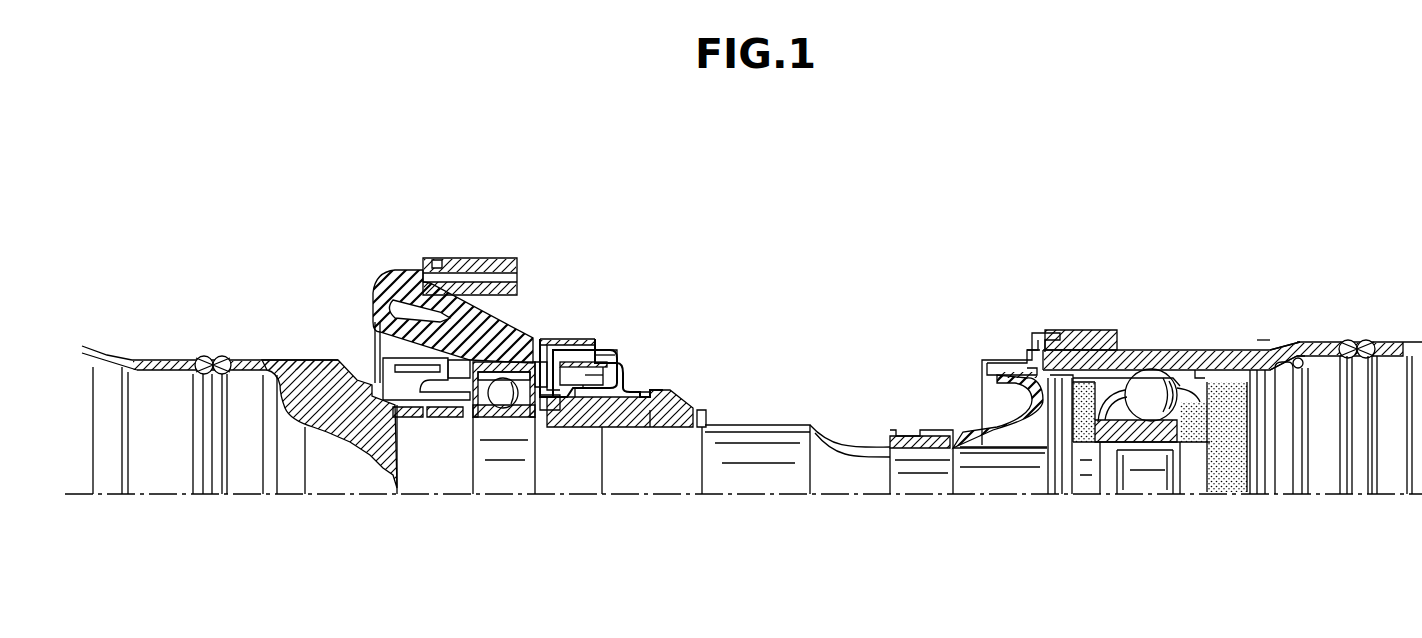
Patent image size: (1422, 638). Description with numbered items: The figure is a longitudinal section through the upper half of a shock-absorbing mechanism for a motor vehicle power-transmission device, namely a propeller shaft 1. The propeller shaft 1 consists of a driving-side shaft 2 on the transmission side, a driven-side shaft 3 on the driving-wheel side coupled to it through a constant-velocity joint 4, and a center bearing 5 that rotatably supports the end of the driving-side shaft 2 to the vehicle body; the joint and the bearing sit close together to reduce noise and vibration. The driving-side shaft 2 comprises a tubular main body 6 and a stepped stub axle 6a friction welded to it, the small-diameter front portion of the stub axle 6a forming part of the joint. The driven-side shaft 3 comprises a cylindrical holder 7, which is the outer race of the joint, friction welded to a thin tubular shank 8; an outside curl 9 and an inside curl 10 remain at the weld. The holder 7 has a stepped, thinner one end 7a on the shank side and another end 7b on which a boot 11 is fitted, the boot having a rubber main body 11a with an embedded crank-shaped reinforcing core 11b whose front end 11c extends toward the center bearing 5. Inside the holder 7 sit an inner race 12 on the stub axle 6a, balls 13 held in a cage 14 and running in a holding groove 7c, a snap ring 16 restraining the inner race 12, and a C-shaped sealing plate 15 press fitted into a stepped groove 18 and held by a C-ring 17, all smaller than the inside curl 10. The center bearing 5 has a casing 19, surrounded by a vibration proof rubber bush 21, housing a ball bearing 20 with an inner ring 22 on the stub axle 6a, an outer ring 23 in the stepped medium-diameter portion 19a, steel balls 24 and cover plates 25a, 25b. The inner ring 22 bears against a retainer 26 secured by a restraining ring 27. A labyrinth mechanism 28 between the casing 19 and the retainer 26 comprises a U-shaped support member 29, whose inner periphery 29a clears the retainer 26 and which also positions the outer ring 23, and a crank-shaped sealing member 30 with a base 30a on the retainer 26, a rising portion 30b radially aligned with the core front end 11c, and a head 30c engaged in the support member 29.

The propeller shaft 1 is at (308, 335).
The driving-side shaft 2 is at (168, 338).
The driven-side shaft 3 is at (1257, 330).
The constant-velocity joint 4 is at (1165, 348).
The center bearing 5 is at (562, 315).
The tubular main body 6 is at (158, 478).
The stub axle 6a is at (766, 478).
The holder 7 is at (1228, 350).
The one end of holder 7a is at (1323, 345).
The another end of holder 7b is at (1085, 346).
The holding groove 7c is at (1200, 352).
The tubular shank 8 is at (1395, 340).
The outside curl 9 is at (1366, 340).
The inside curl 10 is at (1367, 475).
The boot 11 is at (1036, 322).
The rubber main body 11a is at (983, 430).
The reinforcing core 11b is at (1050, 335).
The front end of reinforcing core 11c is at (1015, 352).
The inner race 12 is at (1127, 450).
The balls 13 is at (1155, 445).
The cage 14 is at (1128, 380).
The sealing plate 15 is at (1272, 470).
The snap ring 16 is at (1182, 445).
The C-ring 17 is at (1303, 470).
The stepped groove 18 is at (1272, 352).
The casing 19 is at (432, 332).
The medium-diameter portion of casing 19a is at (462, 358).
The ball bearing 20 is at (522, 355).
The vibration proof rubber bush 21 is at (386, 293).
The inner ring 22 is at (506, 410).
The outer ring 23 is at (492, 378).
The steel balls 24 is at (483, 412).
The annular cover plate 25a is at (556, 402).
The annular cover plate 25b is at (440, 402).
The retainer 26 is at (652, 412).
The restraining ring 27 is at (700, 440).
The labyrinth mechanism 28 is at (615, 342).
The support member 29 is at (577, 350).
The inner periphery of support member 29a is at (605, 390).
The sealing member 30 is at (623, 355).
The small-diameter base 30a is at (643, 378).
The rising portion 30b is at (655, 368).
The head 30c is at (610, 345).